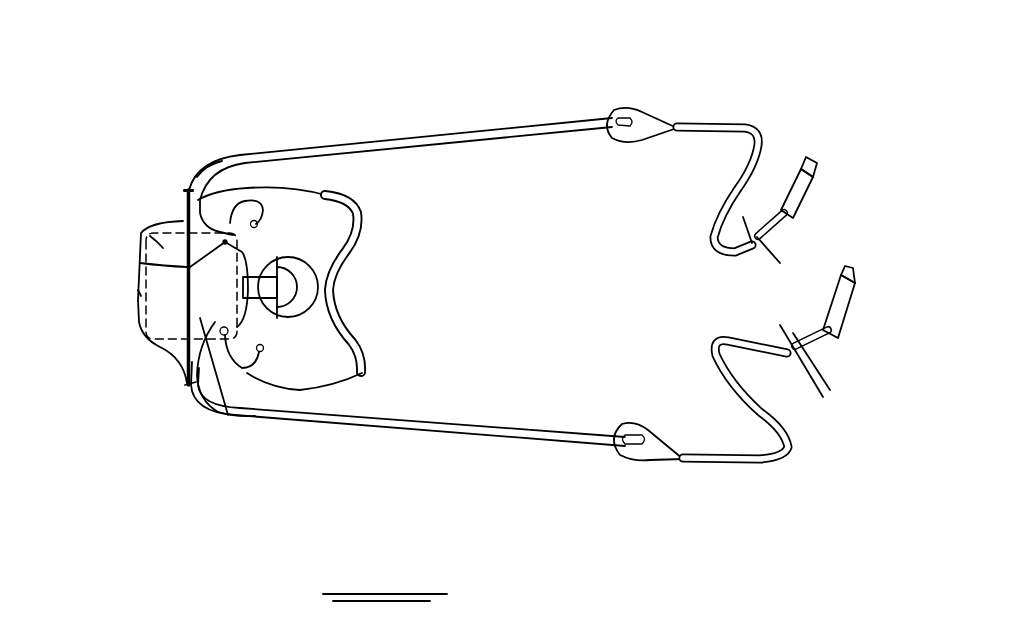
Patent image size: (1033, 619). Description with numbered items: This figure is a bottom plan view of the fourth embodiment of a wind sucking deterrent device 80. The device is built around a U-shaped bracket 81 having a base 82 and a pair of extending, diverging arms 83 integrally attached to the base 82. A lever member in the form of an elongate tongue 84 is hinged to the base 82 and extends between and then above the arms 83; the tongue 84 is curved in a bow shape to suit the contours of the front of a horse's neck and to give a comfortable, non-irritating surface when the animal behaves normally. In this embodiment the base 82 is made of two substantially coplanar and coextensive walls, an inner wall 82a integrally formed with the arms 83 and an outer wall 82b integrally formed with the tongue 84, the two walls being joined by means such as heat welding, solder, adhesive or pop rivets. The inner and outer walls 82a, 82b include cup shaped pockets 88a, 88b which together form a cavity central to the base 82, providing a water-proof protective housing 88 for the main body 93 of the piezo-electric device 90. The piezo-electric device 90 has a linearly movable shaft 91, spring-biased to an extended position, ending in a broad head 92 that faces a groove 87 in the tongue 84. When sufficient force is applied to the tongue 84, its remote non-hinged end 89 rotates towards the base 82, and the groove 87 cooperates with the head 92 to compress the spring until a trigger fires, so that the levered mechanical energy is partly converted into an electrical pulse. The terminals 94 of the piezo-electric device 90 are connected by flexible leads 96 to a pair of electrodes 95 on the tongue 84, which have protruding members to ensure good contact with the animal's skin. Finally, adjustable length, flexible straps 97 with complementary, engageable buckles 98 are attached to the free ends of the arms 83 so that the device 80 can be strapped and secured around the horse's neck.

The wind sucking deterrent device 80 is at (178, 100).
The U-shaped bracket 81 is at (283, 148).
The base 82 is at (173, 376).
The inner wall 82a is at (198, 180).
The outer wall 82b is at (186, 191).
The arms 83 is at (547, 118).
The tongue 84 is at (303, 392).
The groove 87 is at (365, 368).
The housing 88 is at (148, 330).
The cup shaped pocket 88a is at (222, 336).
The cup shaped pocket 88b is at (130, 290).
The remote non-hinged end 89 is at (347, 263).
The piezo-electric device 90 is at (276, 331).
The shaft 91 is at (263, 274).
The broad head 92 is at (290, 278).
The main body 93 is at (163, 248).
The terminals 94 is at (140, 263).
The electrodes 95 is at (260, 352).
The flexible leads 96 is at (230, 223).
The straps 97 is at (745, 125).
The buckles 98 is at (831, 178).